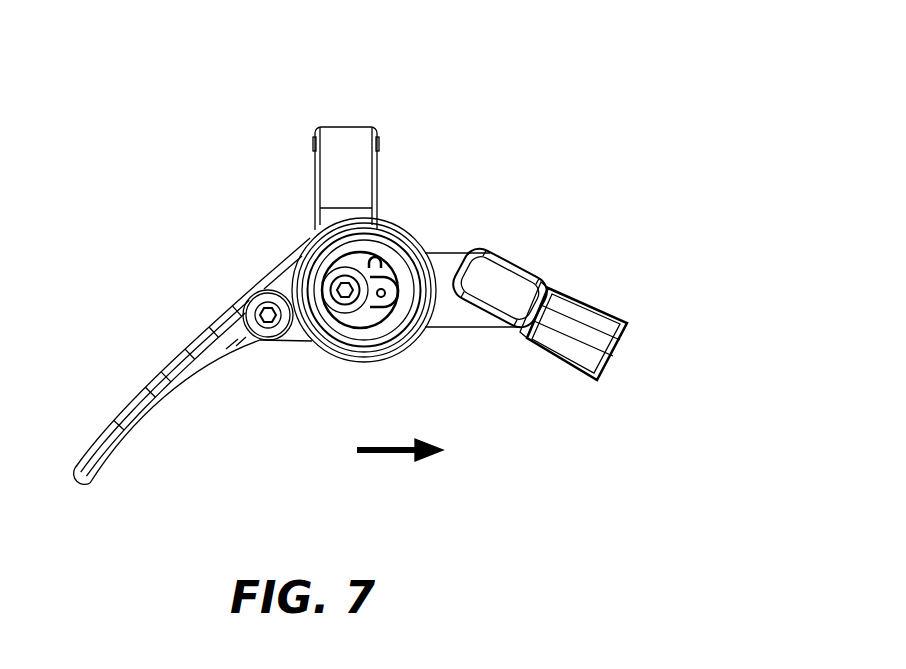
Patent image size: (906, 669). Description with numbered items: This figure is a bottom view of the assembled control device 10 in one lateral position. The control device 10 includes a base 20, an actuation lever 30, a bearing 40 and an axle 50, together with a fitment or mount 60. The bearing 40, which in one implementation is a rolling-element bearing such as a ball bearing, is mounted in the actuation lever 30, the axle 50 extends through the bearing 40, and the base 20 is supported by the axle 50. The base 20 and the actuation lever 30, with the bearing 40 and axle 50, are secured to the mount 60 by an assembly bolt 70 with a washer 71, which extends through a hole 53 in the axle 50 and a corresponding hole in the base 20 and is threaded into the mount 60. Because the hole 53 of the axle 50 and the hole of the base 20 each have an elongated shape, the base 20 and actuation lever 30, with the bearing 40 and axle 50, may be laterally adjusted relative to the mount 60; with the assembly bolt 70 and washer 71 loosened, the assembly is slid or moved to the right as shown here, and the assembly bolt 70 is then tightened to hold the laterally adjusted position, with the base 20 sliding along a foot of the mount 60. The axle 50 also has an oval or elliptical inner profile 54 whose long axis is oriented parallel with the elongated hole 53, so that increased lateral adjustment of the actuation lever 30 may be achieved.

The control device 10 is at (510, 94).
The base 20 is at (453, 310).
The actuation lever 30 is at (214, 220).
The bearing 40 is at (398, 332).
The axle 50 is at (358, 333).
The hole 53 is at (381, 298).
The inner profile 54 is at (371, 262).
The mount 60 is at (352, 145).
The assembly bolt 70 is at (333, 296).
The washer 71 is at (340, 312).